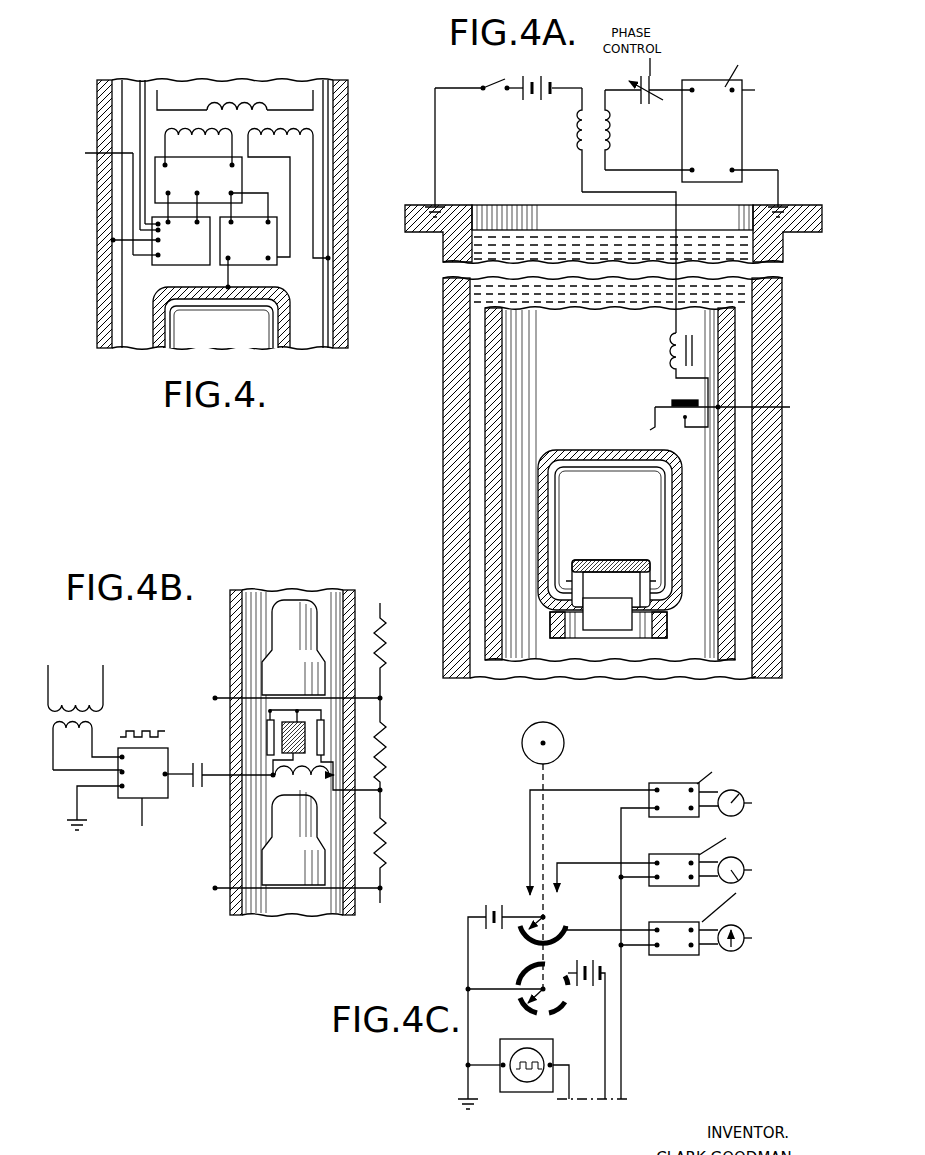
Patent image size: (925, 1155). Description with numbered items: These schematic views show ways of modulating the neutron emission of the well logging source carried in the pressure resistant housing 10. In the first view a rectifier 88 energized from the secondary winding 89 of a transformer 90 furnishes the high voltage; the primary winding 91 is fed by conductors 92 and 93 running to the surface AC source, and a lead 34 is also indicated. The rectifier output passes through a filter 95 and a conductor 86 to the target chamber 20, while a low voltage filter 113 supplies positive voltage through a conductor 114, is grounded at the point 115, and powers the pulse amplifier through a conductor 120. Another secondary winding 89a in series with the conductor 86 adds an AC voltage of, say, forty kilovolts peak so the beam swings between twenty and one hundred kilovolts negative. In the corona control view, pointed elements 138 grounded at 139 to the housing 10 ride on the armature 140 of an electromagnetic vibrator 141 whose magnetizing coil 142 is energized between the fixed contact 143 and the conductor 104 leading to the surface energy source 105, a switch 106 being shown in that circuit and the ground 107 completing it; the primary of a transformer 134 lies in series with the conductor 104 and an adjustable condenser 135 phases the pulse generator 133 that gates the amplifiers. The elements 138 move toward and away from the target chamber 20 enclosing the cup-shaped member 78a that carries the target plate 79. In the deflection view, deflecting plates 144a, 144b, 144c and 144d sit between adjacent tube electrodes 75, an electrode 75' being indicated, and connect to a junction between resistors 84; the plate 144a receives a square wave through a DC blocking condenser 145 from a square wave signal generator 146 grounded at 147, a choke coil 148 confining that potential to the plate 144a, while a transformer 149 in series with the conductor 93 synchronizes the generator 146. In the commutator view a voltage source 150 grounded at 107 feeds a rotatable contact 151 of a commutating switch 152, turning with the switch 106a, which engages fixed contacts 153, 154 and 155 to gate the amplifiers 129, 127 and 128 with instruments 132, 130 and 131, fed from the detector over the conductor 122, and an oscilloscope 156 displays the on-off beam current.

In FIG. 4, the pressure resistant housing 10 is at (97, 285).
In FIG. 4A, the pressure resistant housing 10 is at (735, 522).
In FIG. 4B, the pressure resistant housing 10 is at (230, 660).
In FIG. 4, the target chamber 20 is at (236, 330).
In FIG. 4A, the target chamber 20 is at (570, 451).
In FIG. 4, the conduit 34 is at (122, 122).
In FIG. 4A, the tube electrodes 75 is at (608, 618).
In FIG. 4B, the tube electrodes 75 is at (261, 774).
In FIG. 4B, the auxiliary detector 75' is at (290, 691).
In FIG. 4A, the cup-shaped member 78a is at (595, 560).
In FIG. 4A, the target plate 79 is at (641, 561).
In FIG. 4B, the resistors 84 is at (388, 642).
In FIG. 4, the conductor 86 is at (230, 278).
In FIG. 4, the rectifier 88 is at (155, 187).
In FIG. 4, the secondary winding 89 is at (181, 132).
In FIG. 4, the secondary winding 89a is at (273, 142).
In FIG. 4, the transformer 90 is at (283, 120).
In FIG. 4, the primary winding 91 is at (243, 100).
In FIG. 4, the conductor 92 is at (160, 92).
In FIG. 4B, the conductor 92 is at (48, 673).
In FIG. 4, the conductor 93 is at (313, 92).
In FIG. 4, the filter 95 is at (325, 262).
In FIG. 4A, the conductor 104 is at (582, 180).
In FIG. 4C, the conductor 104 is at (605, 1028).
In FIG. 4A, the source of electrical energy 105 is at (544, 98).
In FIG. 4C, the source of electrical energy 105 is at (582, 986).
In FIG. 4A, the switch 106 is at (479, 98).
In FIG. 4C, the switch 106a is at (515, 1002).
In FIG. 4A, the ground 107 is at (443, 203).
In FIG. 4C, the ground 107 is at (464, 1098).
In FIG. 4, the low voltage filter 113 is at (170, 266).
In FIG. 4, the conductor 114 is at (140, 88).
In FIG. 4, the ground point 115 is at (113, 240).
In FIG. 4, the conductor 120 is at (105, 198).
In FIG. 4C, the conductor 122 is at (621, 1000).
In FIG. 4C, the gated amplifier 127 is at (670, 783).
In FIG. 4C, the gated amplifier 128 is at (670, 854).
In FIG. 4C, the gated amplifier 129 is at (670, 922).
In FIG. 4C, the indicating instrument 130 is at (751, 803).
In FIG. 4C, the indicating instrument 131 is at (751, 870).
In FIG. 4C, the indicating instrument 132 is at (751, 938).
In FIG. 4A, the pulse generator 133 is at (742, 128).
In FIG. 4A, the transformer 134 is at (594, 101).
In FIG. 4A, the adjustable condenser 135 is at (648, 104).
In FIG. 4A, the pointed elements 138 is at (650, 430).
In FIG. 4A, the ground 139 is at (741, 411).
In FIG. 4A, the armature 140 is at (677, 399).
In FIG. 4A, the electromagnetic vibrator 141 is at (649, 404).
In FIG. 4A, the magnetizing coil 142 is at (668, 352).
In FIG. 4A, the vibrator fixed contact 143 is at (687, 420).
In FIG. 4B, the deflecting plate 144a is at (282, 741).
In FIG. 4B, the deflecting plate 144b is at (324, 749).
In FIG. 4B, the deflecting plate 144c is at (305, 728).
In FIG. 4B, the deflecting plate 144d is at (267, 723).
In FIG. 4B, the DC blocking condenser 145 is at (198, 788).
In FIG. 4B, the square wave signal generator 146 is at (166, 800).
In FIG. 4B, the ground 147 is at (72, 822).
In FIG. 4B, the choke coil 148 is at (313, 779).
In FIG. 4B, the transformer 149 is at (98, 723).
In FIG. 4C, the source of voltage 150 is at (468, 923).
In FIG. 4C, the rotatable contact 151 is at (531, 940).
In FIG. 4C, the commutating switch 152 is at (562, 914).
In FIG. 4C, the fixed contact 153 is at (568, 930).
In FIG. 4C, the fixed contact 154 is at (525, 902).
In FIG. 4C, the fixed contact 155 is at (560, 899).
In FIG. 4C, the oscilloscope 156 is at (553, 1049).